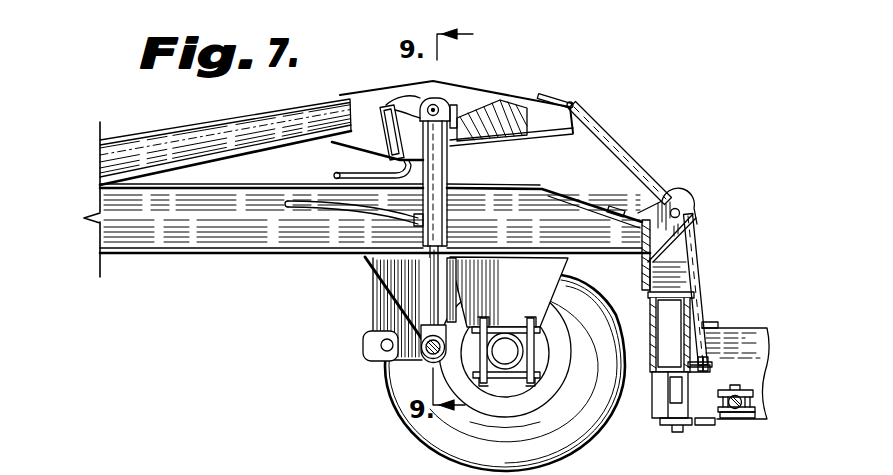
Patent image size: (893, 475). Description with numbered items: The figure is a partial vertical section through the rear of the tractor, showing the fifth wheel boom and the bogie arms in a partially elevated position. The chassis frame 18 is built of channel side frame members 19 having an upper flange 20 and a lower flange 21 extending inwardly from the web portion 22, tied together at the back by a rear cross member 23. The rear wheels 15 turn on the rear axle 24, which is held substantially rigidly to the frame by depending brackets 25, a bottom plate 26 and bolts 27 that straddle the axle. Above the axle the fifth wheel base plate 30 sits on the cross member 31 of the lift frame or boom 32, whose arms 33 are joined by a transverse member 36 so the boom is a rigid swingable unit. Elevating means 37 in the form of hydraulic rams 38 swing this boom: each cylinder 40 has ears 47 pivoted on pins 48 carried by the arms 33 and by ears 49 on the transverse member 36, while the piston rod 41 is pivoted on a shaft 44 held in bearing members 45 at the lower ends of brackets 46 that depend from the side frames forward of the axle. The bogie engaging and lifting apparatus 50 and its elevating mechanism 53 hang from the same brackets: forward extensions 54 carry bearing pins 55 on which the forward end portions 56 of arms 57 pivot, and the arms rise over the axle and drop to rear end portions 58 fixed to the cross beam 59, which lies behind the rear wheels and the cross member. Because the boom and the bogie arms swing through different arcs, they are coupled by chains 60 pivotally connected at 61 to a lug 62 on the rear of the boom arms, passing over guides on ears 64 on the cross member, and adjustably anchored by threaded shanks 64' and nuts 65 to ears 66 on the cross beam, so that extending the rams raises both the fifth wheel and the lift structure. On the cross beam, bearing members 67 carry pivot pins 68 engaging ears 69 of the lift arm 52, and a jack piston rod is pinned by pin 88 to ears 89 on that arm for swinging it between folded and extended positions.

The rear wheels 15 is at (426, 428).
The frame 18 is at (100, 243).
The side frame members 19 is at (187, 254).
The upper flange 20 is at (254, 186).
The lower flange 21 is at (236, 257).
The web portion 22 is at (278, 234).
The rear cross member 23 is at (611, 209).
The rear axle 24 is at (505, 381).
The depending brackets 25 is at (561, 298).
The bottom plate 26 is at (500, 391).
The bolts 27 is at (538, 327).
The base plate 30 is at (471, 114).
The cross member 31 is at (511, 142).
The lift frame or boom 32 is at (229, 120).
The arms 33 is at (177, 130).
The transverse member 36 is at (341, 144).
The elevating means 37 is at (452, 181).
The hydraulic rams 38 is at (400, 229).
The cylinder 40 is at (352, 175).
The piston rod 41 is at (436, 287).
The shaft 44 is at (432, 360).
The bearing members 45 is at (424, 362).
The brackets 46 is at (364, 262).
The ears 47 is at (430, 105).
The pins 48 is at (388, 124).
The ears 49 is at (409, 103).
The bogie engaging and lifting apparatus 50 is at (715, 326).
The lift arm 52 is at (764, 332).
The elevating mechanism 53 is at (705, 302).
The forward extensions 54 is at (372, 305).
The bearing pins 55 is at (381, 343).
The forward end portions 56 is at (363, 360).
The arms 57 is at (635, 290).
The rear end portions 58 is at (688, 283).
The cross beam 59 is at (655, 360).
The chains 60 is at (650, 176).
The pivotal connection 61 is at (574, 104).
The lug 62 is at (548, 94).
The ears 64 is at (688, 225).
The threaded shanks 64' is at (731, 374).
The nuts 65 is at (716, 374).
The ears 66 is at (713, 362).
The bearing members 67 is at (667, 418).
The pivot pins 68 is at (676, 430).
The ears 69 is at (702, 426).
The pin 88 is at (755, 402).
The ears 89 is at (737, 419).